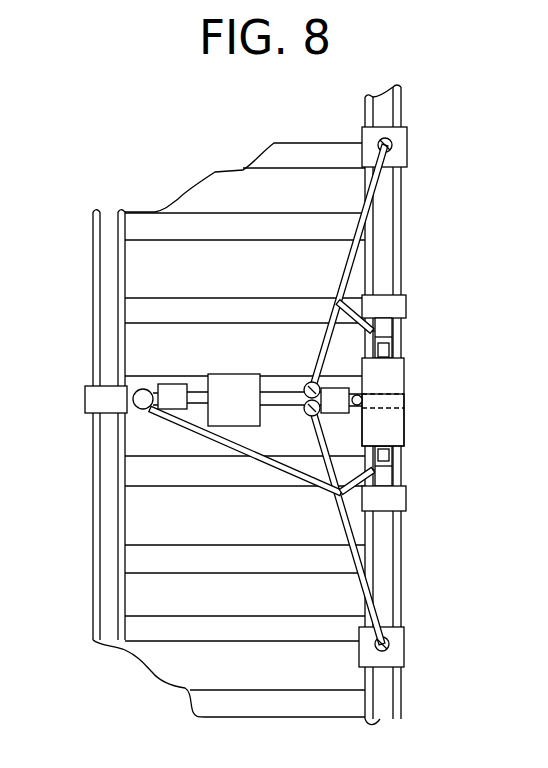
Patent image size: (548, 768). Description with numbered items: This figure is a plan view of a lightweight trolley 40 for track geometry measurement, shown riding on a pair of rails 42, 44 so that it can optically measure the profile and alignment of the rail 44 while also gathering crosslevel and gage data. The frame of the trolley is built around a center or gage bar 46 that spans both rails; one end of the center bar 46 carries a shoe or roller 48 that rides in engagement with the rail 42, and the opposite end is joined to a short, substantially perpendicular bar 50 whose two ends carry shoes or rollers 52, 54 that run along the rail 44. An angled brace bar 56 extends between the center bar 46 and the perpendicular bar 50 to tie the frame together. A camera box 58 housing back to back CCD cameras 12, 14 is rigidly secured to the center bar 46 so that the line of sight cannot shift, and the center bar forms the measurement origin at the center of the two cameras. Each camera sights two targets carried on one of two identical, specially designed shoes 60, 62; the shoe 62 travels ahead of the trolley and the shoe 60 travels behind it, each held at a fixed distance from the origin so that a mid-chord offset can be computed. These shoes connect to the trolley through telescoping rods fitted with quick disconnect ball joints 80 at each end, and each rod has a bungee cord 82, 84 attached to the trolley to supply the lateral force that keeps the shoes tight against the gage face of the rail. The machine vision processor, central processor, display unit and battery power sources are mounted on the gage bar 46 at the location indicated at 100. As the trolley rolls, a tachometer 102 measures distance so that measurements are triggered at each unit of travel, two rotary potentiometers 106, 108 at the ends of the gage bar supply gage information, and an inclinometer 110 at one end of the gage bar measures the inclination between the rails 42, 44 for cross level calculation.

The CCD camera 12 is at (401, 373).
The CCD camera 14 is at (401, 423).
The trolley 40 is at (135, 347).
The rail 42 is at (107, 583).
The rail 44 is at (391, 699).
The center bar 46 is at (253, 378).
The shoe or roller 48 is at (103, 404).
The perpendicular bar 50 is at (387, 338).
The shoe or roller 52 is at (406, 298).
The shoe or roller 54 is at (407, 506).
The angled brace bar 56 is at (250, 445).
The camera box 58 is at (406, 404).
The shoe 60 is at (409, 143).
The shoe 62 is at (407, 655).
The quick disconnect ball joints 80 is at (367, 133).
The bungee cord 82 is at (374, 297).
The bungee cord 84 is at (384, 478).
The electronics mounting location 100 is at (220, 383).
The tachometer 102 is at (308, 377).
The rotary potentiometer 106 is at (138, 385).
The rotary potentiometer 108 is at (362, 390).
The inclinometer 110 is at (170, 391).